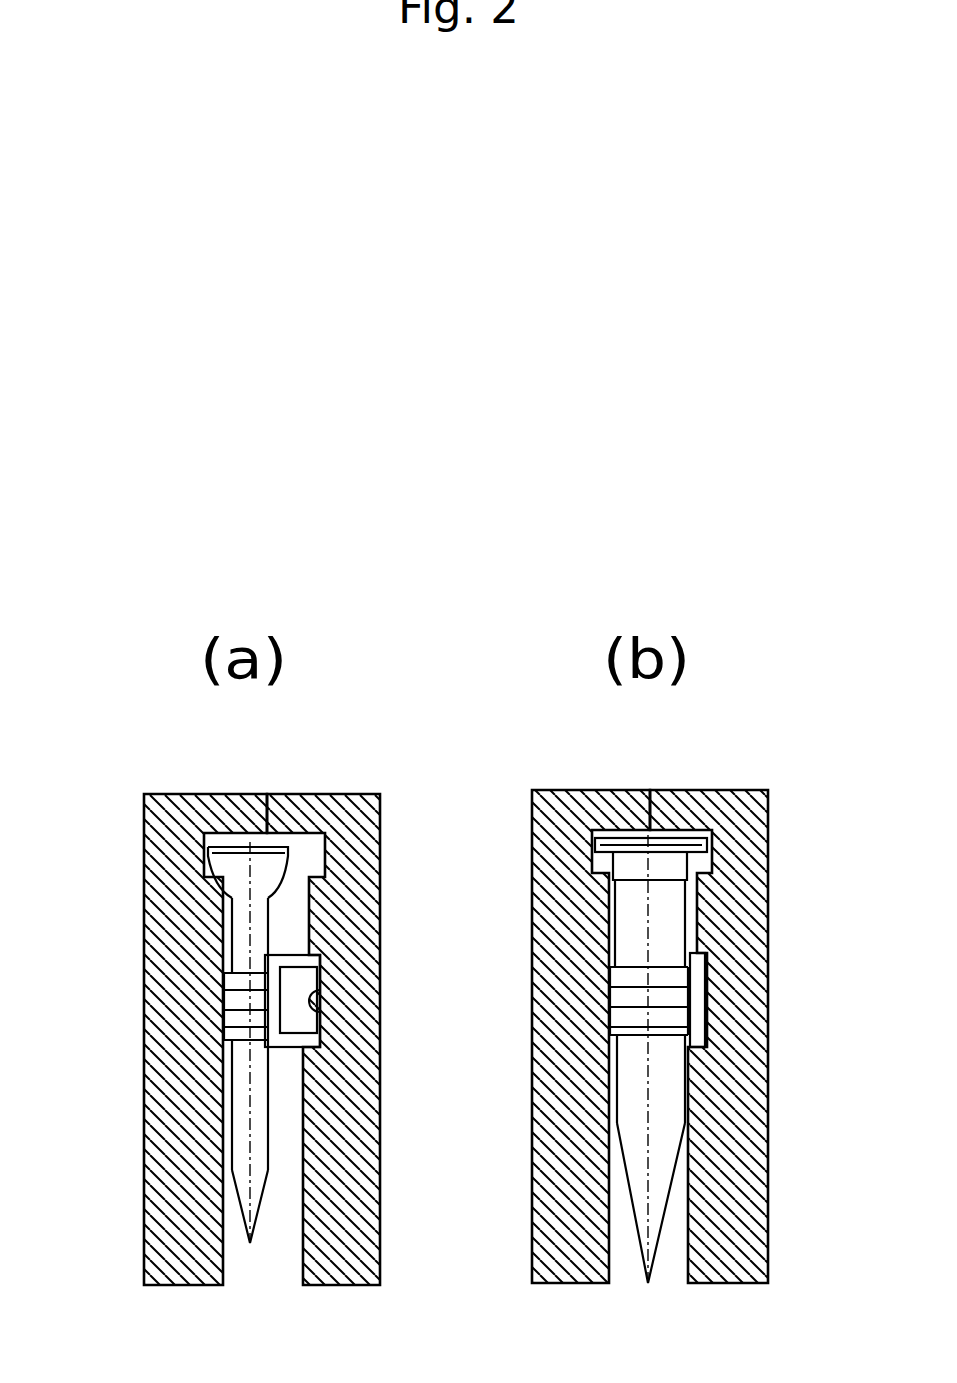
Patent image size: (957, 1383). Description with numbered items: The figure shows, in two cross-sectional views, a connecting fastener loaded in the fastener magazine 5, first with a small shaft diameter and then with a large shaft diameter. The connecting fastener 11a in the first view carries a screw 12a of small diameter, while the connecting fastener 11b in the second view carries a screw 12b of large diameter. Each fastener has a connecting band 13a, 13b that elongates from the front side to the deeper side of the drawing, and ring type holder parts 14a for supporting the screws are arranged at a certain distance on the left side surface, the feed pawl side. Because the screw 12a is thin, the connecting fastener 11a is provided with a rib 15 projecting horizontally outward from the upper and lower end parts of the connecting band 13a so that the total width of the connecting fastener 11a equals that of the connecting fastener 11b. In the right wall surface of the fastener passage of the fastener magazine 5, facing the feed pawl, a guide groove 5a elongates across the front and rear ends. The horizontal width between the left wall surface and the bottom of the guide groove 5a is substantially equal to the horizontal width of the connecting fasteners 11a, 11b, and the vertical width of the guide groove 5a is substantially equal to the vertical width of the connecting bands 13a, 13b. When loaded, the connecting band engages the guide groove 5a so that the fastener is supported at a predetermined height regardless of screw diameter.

The fastener magazine 5 is at (168, 795).
The guide groove 5a is at (322, 1013).
The connecting fastener 11a is at (272, 903).
The connecting fastener 11b is at (680, 840).
The screw 12a is at (250, 1243).
The screw 12b is at (648, 1283).
The connecting band 13a is at (266, 957).
The connecting band 13b is at (707, 962).
The ring type holder part 14a is at (230, 1062).
The rib 15 is at (320, 957).